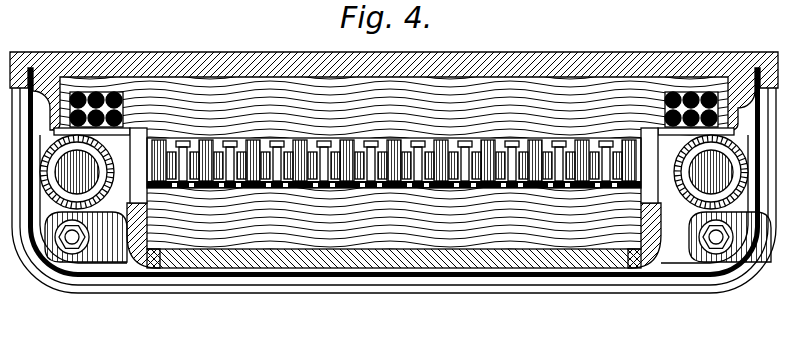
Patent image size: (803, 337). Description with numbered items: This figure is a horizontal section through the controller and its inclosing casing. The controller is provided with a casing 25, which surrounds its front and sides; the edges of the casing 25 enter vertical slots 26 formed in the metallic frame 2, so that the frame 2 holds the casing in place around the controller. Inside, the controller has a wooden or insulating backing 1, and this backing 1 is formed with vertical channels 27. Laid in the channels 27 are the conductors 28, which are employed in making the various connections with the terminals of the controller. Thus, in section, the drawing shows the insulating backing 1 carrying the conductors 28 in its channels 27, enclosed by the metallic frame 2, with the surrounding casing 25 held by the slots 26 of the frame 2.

The wooden or insulating backing 1 is at (394, 163).
The metallic frame 2 is at (48, 62).
The casing 25 is at (503, 277).
The vertical slots 26 is at (27, 68).
The vertical channels 27 is at (100, 94).
The conductors 28 is at (118, 94).